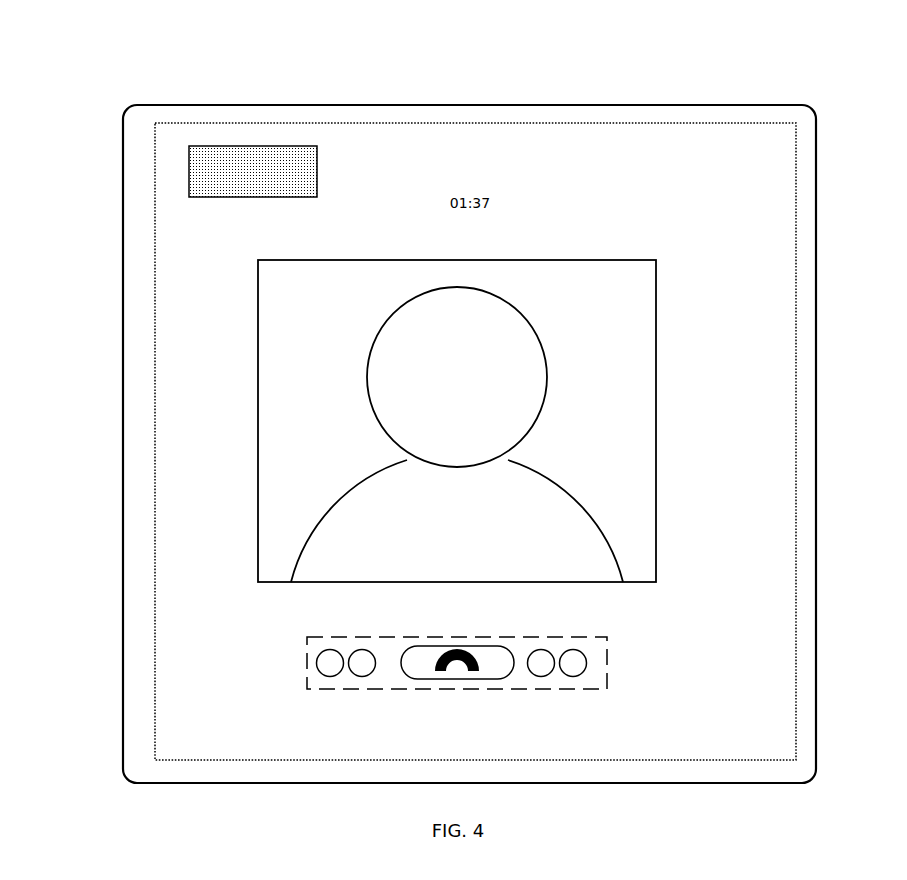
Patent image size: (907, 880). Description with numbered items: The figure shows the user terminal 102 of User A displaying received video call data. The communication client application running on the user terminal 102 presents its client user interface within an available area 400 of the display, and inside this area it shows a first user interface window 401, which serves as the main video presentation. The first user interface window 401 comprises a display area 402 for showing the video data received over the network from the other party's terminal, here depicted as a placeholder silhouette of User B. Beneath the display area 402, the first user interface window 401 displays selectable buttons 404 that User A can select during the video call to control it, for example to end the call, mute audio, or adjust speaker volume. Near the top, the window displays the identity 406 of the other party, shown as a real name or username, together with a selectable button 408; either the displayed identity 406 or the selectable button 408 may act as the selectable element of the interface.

The user terminal 102 is at (460, 104).
The available area 400 is at (798, 281).
The first user interface window 401 is at (665, 212).
The display area 402 is at (657, 369).
The selectable buttons 404 is at (607, 656).
The displayed identity 406 is at (507, 160).
The selectable button 408 is at (218, 198).